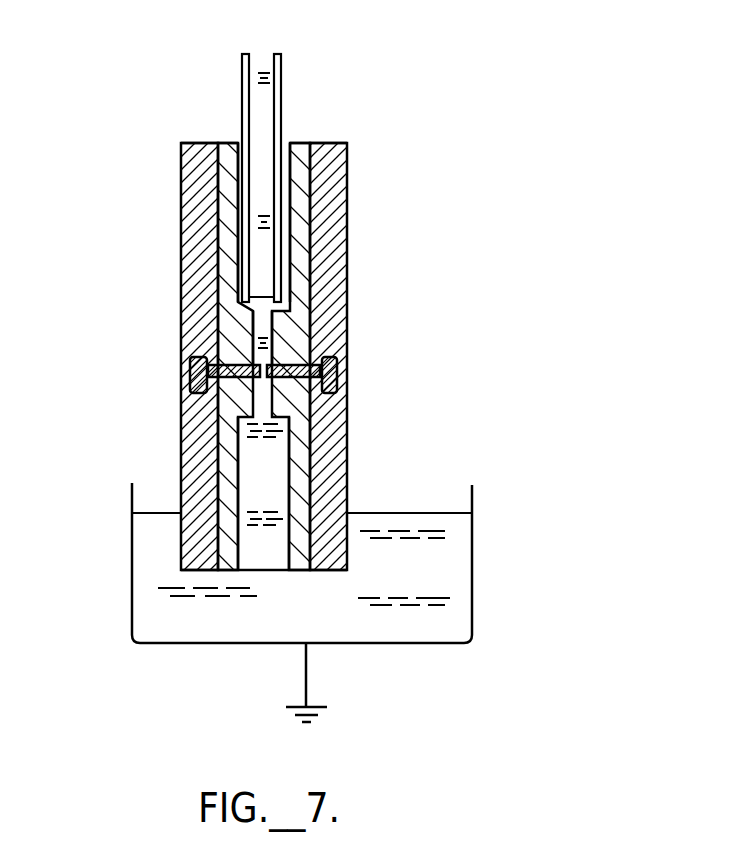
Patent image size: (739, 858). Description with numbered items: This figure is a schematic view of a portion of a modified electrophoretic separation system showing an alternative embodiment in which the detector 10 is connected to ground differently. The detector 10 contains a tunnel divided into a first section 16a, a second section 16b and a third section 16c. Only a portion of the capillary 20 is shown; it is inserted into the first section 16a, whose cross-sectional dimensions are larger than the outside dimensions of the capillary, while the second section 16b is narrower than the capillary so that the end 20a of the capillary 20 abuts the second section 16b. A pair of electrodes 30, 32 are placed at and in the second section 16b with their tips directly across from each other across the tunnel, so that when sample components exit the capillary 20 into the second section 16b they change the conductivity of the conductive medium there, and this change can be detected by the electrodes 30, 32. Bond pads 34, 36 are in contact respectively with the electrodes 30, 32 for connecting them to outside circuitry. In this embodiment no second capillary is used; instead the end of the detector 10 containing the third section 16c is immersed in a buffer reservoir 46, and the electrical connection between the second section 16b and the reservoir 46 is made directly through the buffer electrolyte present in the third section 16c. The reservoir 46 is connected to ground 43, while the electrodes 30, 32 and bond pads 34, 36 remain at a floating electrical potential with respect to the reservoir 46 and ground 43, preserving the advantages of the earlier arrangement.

The detector 10 is at (348, 163).
The first section 16a is at (295, 235).
The second section 16b is at (272, 325).
The third section 16c is at (272, 483).
The capillary 20 is at (283, 69).
The end of capillary 20a is at (288, 292).
The electrode 30 is at (303, 392).
The electrode 32 is at (212, 406).
The bond pad 34 is at (347, 377).
The bond pad 36 is at (193, 367).
The ground 43 is at (310, 727).
The buffer reservoir 46 is at (443, 578).